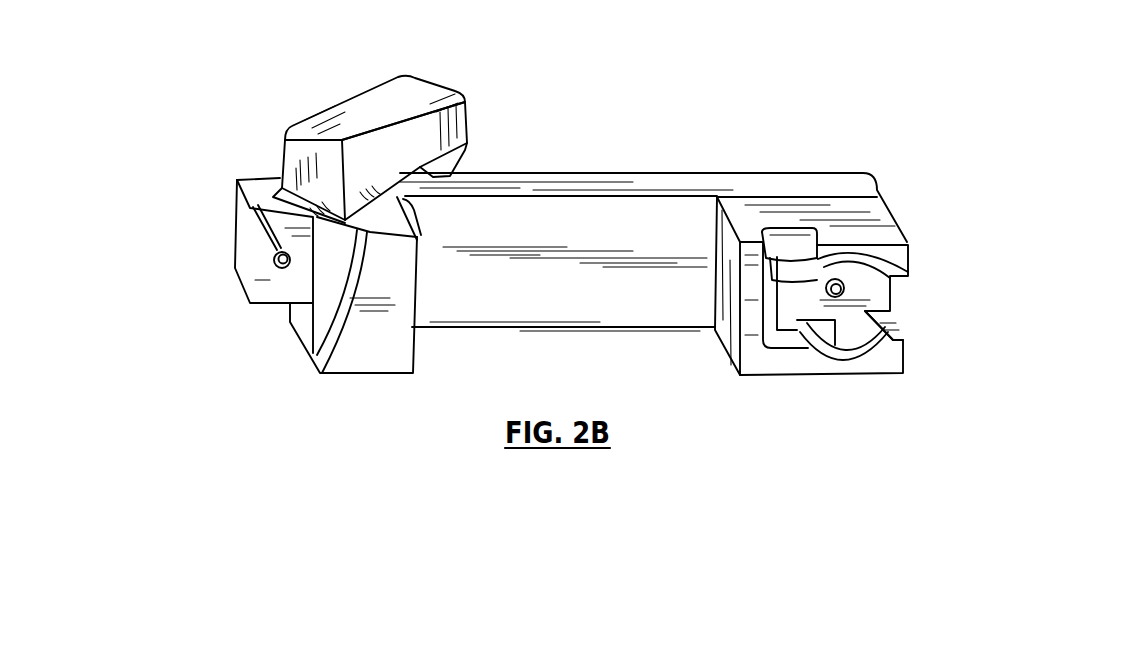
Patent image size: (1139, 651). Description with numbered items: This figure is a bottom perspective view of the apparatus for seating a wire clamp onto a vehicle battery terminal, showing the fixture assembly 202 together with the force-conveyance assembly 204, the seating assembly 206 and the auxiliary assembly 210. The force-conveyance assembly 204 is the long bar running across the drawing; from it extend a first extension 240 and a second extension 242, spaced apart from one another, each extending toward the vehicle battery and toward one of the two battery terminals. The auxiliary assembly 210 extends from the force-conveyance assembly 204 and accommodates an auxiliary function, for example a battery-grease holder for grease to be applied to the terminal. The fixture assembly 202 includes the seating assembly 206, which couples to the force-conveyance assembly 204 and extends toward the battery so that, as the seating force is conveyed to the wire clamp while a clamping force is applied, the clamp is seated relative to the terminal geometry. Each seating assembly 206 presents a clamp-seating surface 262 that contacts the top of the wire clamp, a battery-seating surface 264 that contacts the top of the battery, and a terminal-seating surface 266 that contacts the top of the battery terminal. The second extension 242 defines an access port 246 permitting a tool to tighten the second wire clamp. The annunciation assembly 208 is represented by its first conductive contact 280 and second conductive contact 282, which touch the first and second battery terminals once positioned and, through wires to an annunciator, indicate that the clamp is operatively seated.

The fixture assembly 202 is at (697, 63).
The force-conveyance assembly 204 is at (597, 172).
The seating assembly 206 is at (730, 135).
The annunciation assembly 208 is at (155, 165).
The auxiliary assembly 210 is at (382, 100).
The first extension 240 is at (390, 218).
The second extension 242 is at (873, 215).
The access port 246 is at (800, 238).
The clamp-seating surface 262 is at (327, 288).
The battery-seating surface 264 is at (375, 352).
The terminal-seating surface 266 is at (270, 280).
The first conductive contact 280 is at (277, 252).
The second conductive contact 282 is at (836, 297).